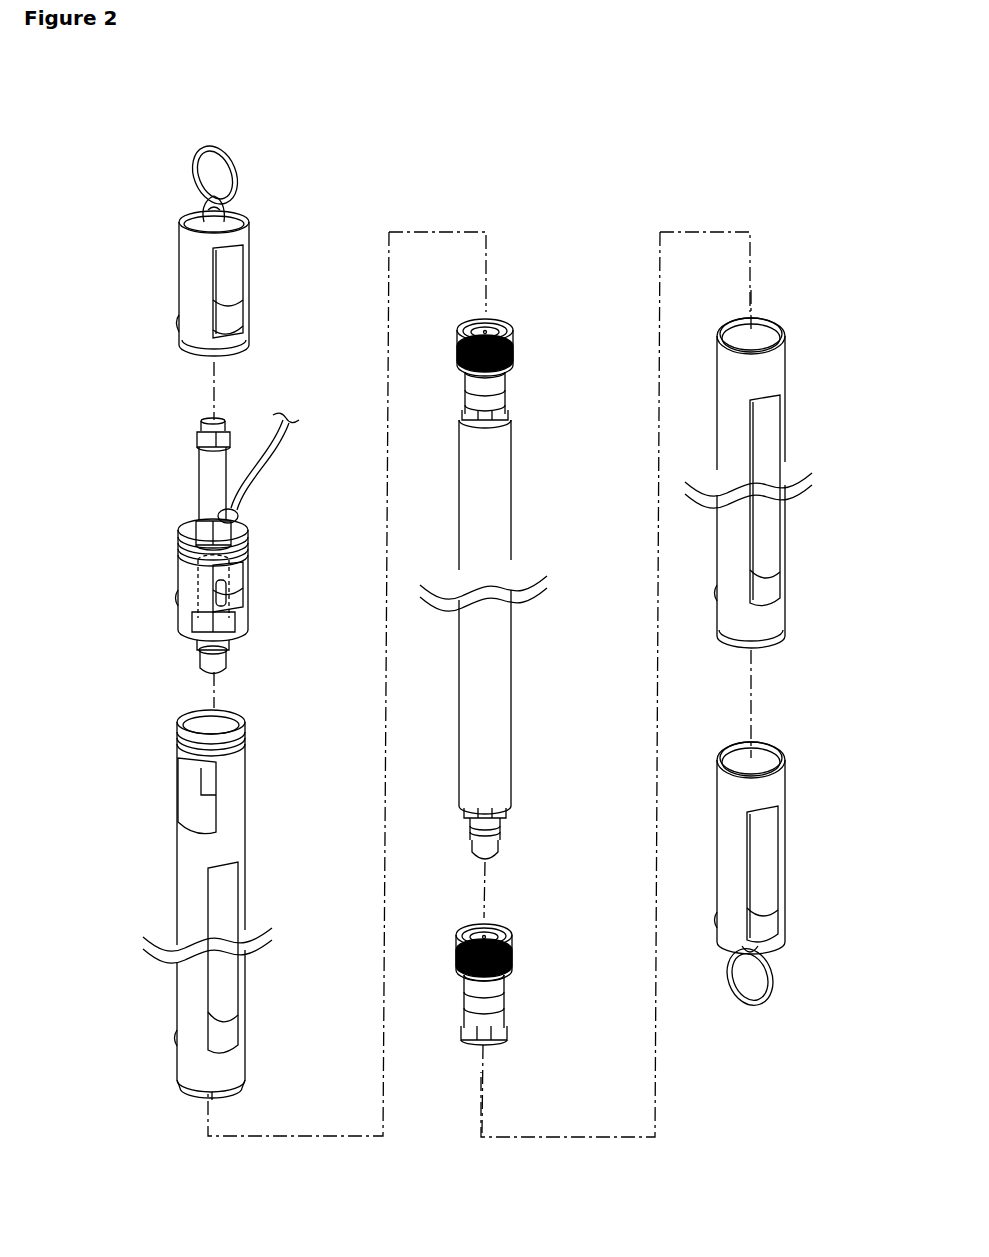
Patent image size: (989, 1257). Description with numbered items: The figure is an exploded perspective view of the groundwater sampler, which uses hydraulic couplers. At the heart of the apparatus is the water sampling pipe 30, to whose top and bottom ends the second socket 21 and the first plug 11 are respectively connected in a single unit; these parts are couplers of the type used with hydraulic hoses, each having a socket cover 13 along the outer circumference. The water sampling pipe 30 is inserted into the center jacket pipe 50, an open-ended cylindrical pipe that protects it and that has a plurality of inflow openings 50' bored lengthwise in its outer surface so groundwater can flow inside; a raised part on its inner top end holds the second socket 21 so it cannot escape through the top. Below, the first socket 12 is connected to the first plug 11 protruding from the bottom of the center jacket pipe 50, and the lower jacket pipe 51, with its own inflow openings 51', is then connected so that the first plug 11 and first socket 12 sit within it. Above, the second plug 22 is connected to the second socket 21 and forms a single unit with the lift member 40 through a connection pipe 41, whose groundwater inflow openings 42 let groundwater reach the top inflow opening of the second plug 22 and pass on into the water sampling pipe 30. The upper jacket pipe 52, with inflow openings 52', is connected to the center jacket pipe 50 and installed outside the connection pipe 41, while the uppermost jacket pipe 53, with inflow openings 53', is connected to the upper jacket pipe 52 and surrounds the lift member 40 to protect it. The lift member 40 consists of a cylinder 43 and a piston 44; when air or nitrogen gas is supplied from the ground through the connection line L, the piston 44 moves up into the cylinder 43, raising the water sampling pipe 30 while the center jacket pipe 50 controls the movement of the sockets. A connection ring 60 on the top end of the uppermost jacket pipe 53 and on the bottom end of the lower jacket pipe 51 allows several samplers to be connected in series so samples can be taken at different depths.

The first plug 11 is at (500, 851).
The first socket 12 is at (503, 991).
The socket cover 13 is at (516, 357).
The second socket 21 is at (508, 384).
The second plug 22 is at (198, 663).
The water sampling pipe 30 is at (505, 666).
The lift member 40 is at (123, 452).
The connection pipe 41 is at (190, 578).
The groundwater inflow openings 42 is at (226, 595).
The cylinder 43 is at (205, 464).
The piston 44 is at (186, 521).
The center jacket pipe 50 is at (476, 708).
The inflow openings 50' is at (481, 614).
The lower jacket pipe 51 is at (788, 848).
The inflow openings 51' is at (809, 874).
The upper jacket pipe 52 is at (172, 580).
The inflow openings 52' is at (273, 579).
The uppermost jacket pipe 53 is at (175, 283).
The inflow openings 53' is at (273, 291).
The connection ring 60 is at (218, 148).
The connection line L is at (280, 456).